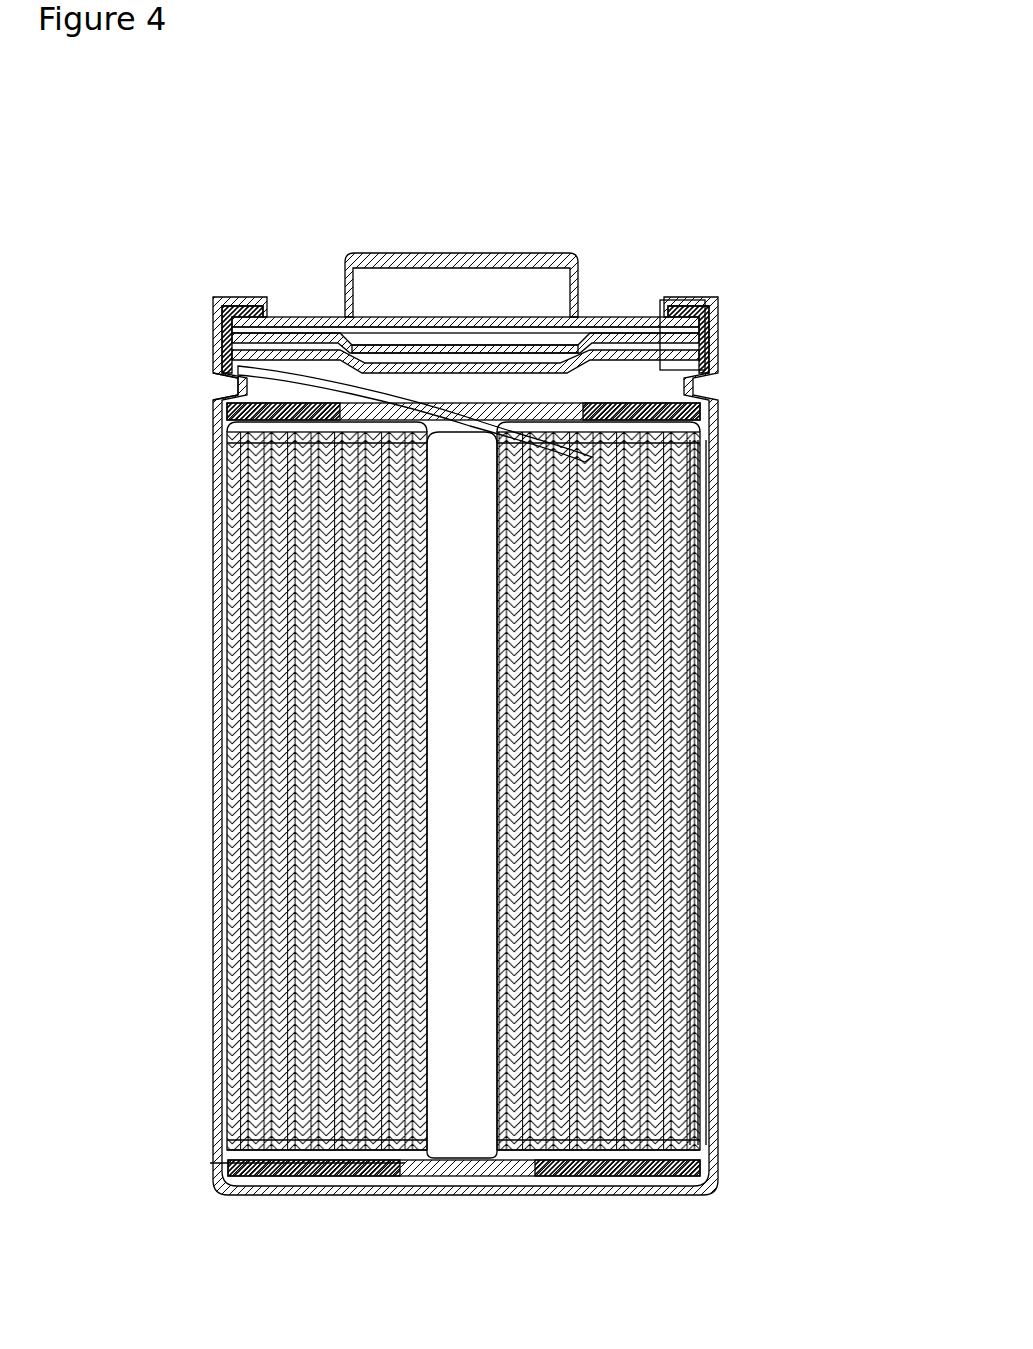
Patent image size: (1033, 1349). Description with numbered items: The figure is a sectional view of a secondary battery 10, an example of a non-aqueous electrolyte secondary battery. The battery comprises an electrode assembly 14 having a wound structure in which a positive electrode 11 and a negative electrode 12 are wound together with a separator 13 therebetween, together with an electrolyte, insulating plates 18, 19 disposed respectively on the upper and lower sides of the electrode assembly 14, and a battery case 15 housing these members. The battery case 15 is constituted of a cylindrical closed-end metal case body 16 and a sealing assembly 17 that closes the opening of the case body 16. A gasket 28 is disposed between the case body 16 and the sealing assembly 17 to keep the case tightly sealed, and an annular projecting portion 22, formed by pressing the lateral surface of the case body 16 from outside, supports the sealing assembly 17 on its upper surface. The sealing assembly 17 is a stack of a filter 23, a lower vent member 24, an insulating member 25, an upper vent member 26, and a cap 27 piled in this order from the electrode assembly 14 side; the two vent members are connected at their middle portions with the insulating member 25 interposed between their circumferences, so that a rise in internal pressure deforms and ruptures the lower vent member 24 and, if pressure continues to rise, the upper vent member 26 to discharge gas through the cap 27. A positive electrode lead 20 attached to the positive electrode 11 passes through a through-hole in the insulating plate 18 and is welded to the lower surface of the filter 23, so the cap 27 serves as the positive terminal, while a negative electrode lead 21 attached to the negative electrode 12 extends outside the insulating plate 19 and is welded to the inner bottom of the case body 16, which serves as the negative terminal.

The secondary battery 10 is at (731, 125).
The positive electrode 11 is at (713, 858).
The negative electrode 12 is at (713, 888).
The separator 13 is at (713, 918).
The electrode assembly 14 is at (818, 850).
The battery case 15 is at (699, 193).
The case body 16 is at (680, 298).
The sealing assembly 17 is at (607, 317).
The insulating plate 18 is at (712, 410).
The insulating plate 19 is at (714, 1162).
The positive electrode lead 20 is at (238, 366).
The negative electrode lead 21 is at (210, 1163).
The projecting portion 22 is at (238, 385).
The filter 23 is at (467, 363).
The lower vent member 24 is at (355, 333).
The insulating member 25 is at (298, 327).
The upper vent member 26 is at (385, 333).
The cap 27 is at (543, 253).
The gasket 28 is at (720, 306).